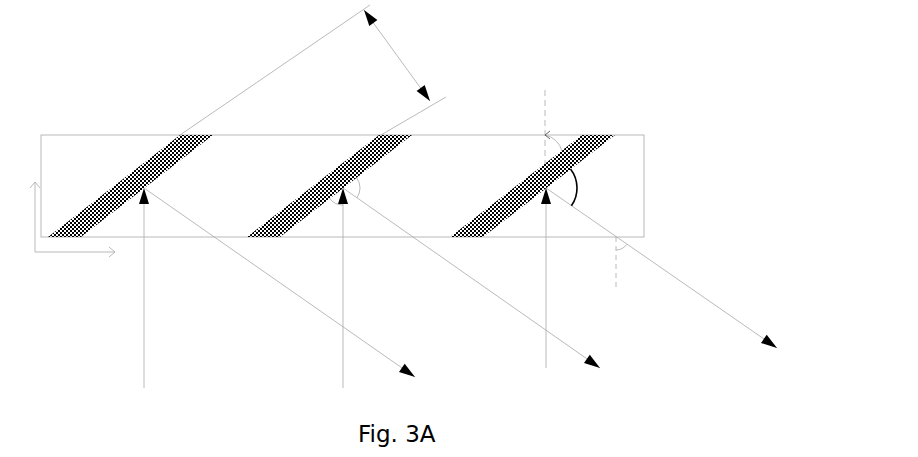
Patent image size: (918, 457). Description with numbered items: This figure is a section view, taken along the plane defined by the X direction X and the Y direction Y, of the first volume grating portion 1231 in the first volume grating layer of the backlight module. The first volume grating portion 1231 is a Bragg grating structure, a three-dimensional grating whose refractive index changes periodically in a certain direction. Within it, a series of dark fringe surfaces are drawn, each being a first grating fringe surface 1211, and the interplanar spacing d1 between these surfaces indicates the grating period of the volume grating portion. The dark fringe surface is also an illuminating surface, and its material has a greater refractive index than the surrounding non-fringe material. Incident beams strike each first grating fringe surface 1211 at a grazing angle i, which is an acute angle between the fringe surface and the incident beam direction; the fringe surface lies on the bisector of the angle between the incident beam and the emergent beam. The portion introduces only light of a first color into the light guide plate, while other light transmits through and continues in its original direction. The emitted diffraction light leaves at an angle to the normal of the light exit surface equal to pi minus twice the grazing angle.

The first grating fringe surface 1211 is at (580, 168).
The first volume grating portion 1231 is at (586, 114).
The interplanar spacing d1 is at (313, 70).
The grazing angle i is at (348, 200).
The X direction X is at (75, 265).
The Y direction Y is at (25, 217).